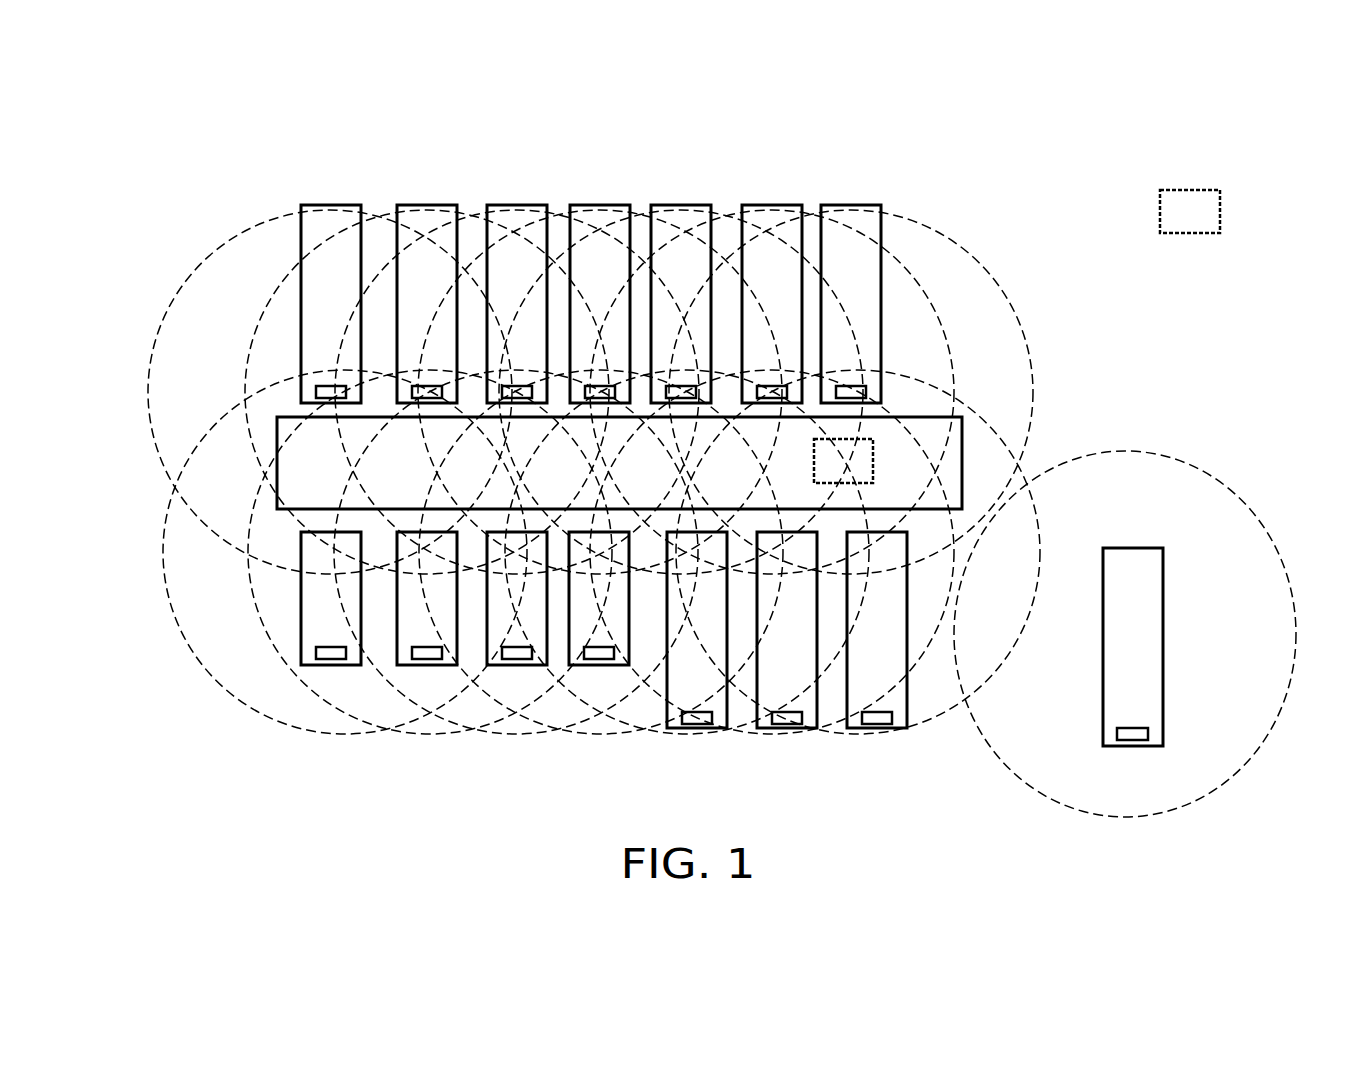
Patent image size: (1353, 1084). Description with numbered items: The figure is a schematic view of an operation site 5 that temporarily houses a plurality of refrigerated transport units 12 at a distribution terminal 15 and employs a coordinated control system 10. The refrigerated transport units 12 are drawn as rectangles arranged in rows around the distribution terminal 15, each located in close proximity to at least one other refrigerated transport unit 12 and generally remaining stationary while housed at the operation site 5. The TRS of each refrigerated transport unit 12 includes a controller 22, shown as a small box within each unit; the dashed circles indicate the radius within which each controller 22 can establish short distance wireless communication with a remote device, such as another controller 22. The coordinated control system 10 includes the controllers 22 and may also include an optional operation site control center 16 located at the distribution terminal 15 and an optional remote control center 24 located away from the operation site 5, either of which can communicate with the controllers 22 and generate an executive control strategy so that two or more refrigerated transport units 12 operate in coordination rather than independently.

The operation site 5 is at (1130, 158).
The coordinated control system 10 is at (156, 231).
The refrigerated transport unit 12 is at (328, 222).
The distribution terminal 15 is at (962, 450).
The operation site control center 16 is at (875, 462).
The controller 22 is at (314, 396).
The remote control center 24 is at (1223, 212).